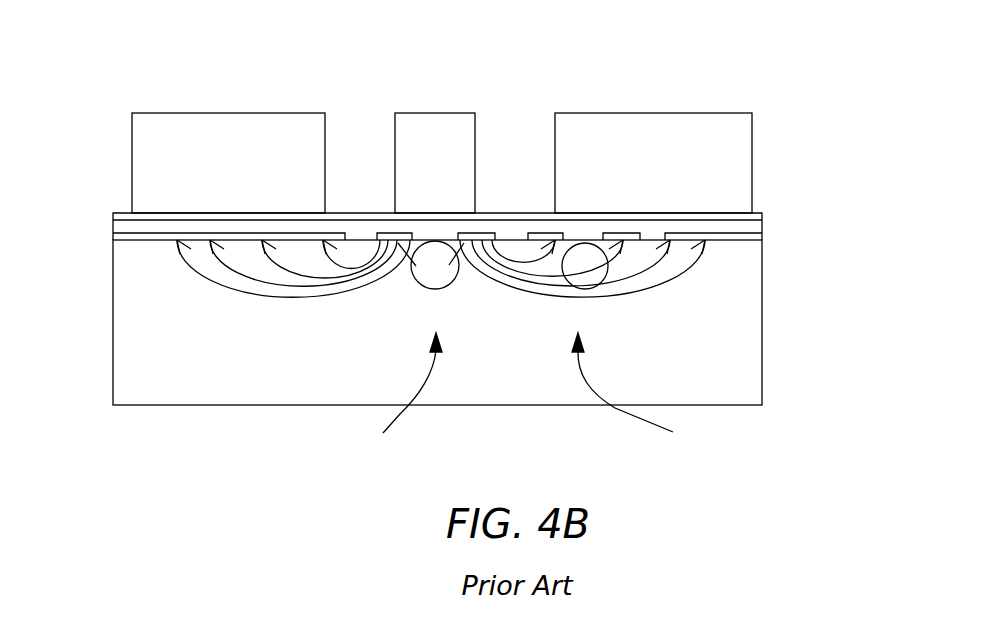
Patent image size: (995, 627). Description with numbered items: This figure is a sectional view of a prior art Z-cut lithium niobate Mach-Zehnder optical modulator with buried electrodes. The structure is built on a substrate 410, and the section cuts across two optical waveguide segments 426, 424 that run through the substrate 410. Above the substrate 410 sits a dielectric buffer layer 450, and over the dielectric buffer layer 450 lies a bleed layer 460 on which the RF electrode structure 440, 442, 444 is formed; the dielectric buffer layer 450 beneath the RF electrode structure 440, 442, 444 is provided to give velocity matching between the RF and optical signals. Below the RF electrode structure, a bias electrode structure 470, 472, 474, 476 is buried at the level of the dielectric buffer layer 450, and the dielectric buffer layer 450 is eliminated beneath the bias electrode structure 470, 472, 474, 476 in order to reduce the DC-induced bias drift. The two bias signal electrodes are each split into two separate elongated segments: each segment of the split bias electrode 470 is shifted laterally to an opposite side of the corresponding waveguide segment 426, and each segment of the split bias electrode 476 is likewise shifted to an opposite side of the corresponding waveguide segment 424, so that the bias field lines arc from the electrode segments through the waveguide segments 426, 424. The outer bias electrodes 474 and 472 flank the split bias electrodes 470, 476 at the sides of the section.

The substrate 410 is at (168, 392).
The waveguide segment 424 is at (642, 393).
The waveguide segment 426 is at (393, 393).
The RF electrode structure 440 is at (443, 161).
The RF electrode structure 442 is at (621, 161).
The RF electrode structure 444 is at (180, 162).
The dielectric buffer layer 450 is at (762, 226).
The bleed layer 460 is at (762, 216).
The split bias electrode 470 is at (478, 232).
The bias electrode structure 472 is at (762, 238).
The bias electrode structure 474 is at (113, 234).
The split bias electrode 476 is at (628, 236).